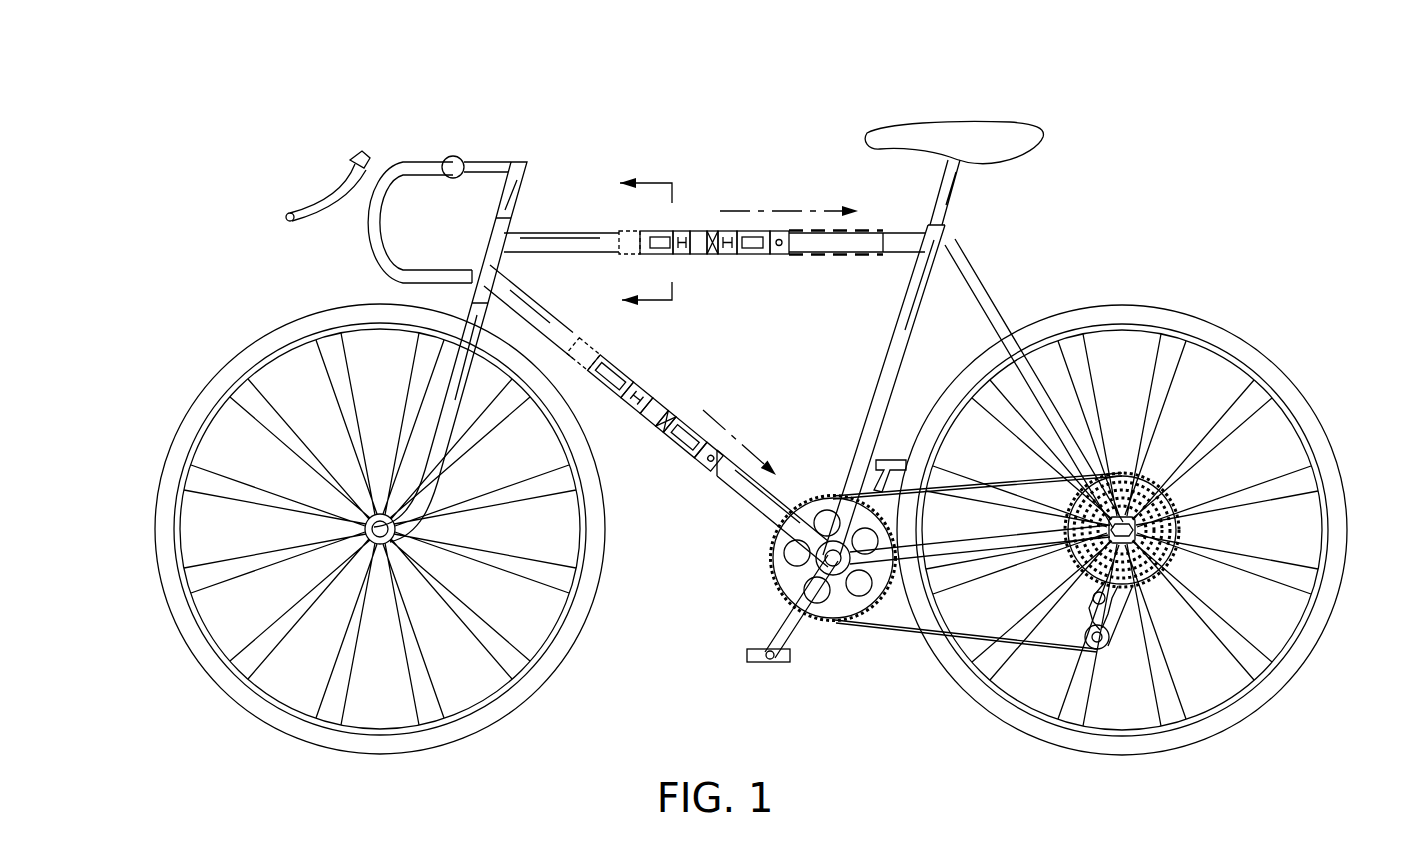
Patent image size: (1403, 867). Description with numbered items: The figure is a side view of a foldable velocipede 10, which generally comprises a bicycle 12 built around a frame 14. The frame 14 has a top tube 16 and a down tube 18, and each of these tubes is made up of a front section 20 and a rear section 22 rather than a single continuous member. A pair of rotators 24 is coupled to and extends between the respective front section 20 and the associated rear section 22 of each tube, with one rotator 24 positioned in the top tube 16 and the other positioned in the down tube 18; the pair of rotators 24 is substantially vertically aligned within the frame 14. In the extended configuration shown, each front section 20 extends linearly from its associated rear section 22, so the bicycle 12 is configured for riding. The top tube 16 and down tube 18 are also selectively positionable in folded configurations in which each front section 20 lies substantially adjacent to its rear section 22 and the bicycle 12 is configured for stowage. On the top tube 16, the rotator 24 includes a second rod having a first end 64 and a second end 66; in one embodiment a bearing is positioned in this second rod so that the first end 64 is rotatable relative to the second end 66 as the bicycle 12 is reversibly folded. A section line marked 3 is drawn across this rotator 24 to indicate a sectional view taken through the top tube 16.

The foldable velocipede 10 is at (1098, 55).
The bicycle 12 is at (1172, 98).
The frame 14 is at (792, 492).
The top tube 16 is at (572, 225).
The down tube 18 is at (534, 240).
The front section 20 is at (565, 340).
The rear section 22 is at (763, 518).
The rotator 24 is at (684, 256).
The first end 64 is at (640, 225).
The second end 66 is at (682, 226).
The section line of FIG. 3 is at (630, 241).